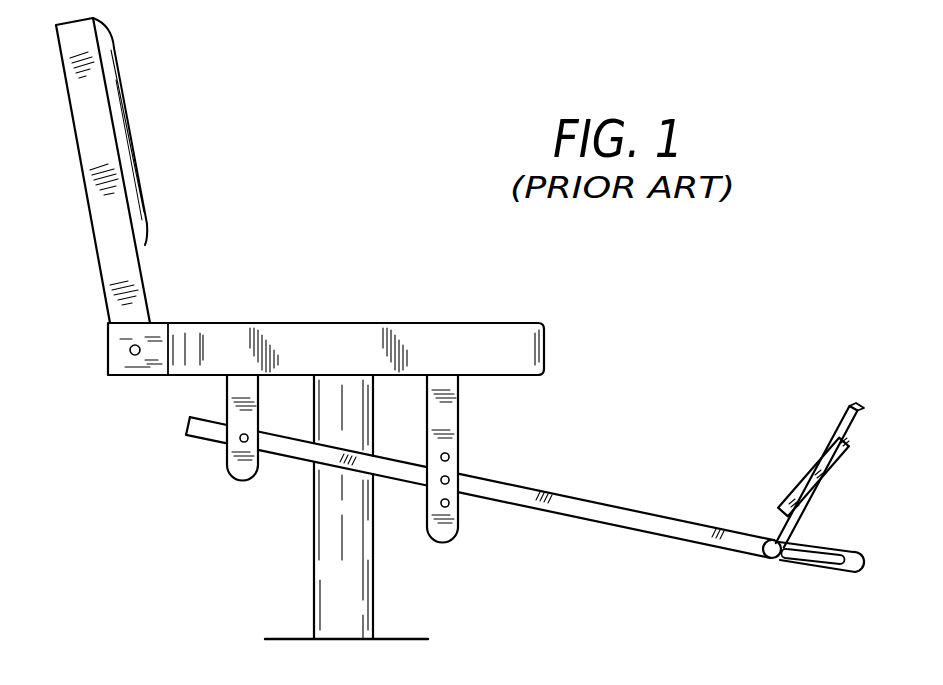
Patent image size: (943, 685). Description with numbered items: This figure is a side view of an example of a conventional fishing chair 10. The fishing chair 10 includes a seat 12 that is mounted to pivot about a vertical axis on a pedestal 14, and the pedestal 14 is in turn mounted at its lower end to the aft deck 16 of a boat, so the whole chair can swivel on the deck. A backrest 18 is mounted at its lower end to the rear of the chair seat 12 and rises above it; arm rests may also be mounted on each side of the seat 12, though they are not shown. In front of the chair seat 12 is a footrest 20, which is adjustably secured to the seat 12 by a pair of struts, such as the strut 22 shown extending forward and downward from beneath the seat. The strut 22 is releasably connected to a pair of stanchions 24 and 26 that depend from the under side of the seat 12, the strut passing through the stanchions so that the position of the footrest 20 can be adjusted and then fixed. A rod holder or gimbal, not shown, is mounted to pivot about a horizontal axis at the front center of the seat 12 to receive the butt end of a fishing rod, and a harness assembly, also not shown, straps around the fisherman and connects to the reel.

The fishing chair 10 is at (297, 162).
The seat 12 is at (442, 340).
The pedestal 14 is at (362, 582).
The aft deck 16 is at (279, 637).
The backrest 18 is at (98, 259).
The footrest 20 is at (808, 463).
The strut 22 is at (648, 525).
The stanchion 24 is at (237, 465).
The stanchion 26 is at (453, 417).